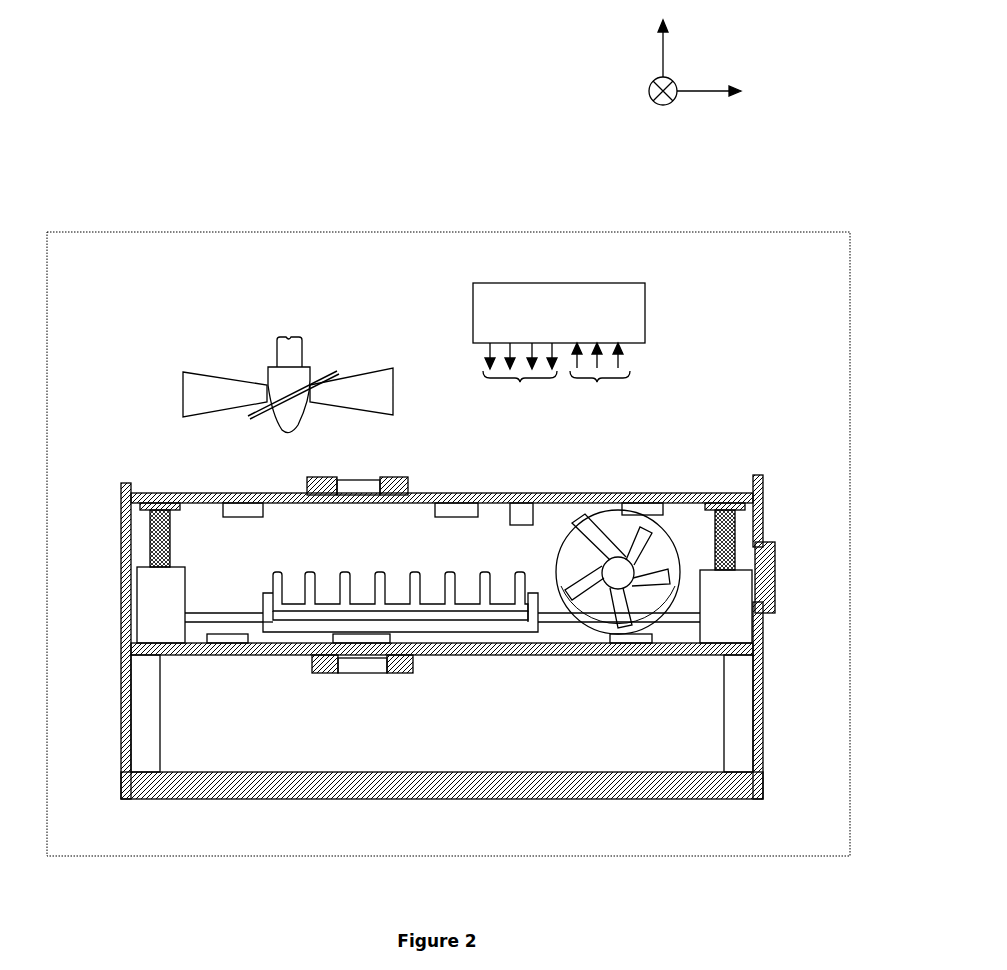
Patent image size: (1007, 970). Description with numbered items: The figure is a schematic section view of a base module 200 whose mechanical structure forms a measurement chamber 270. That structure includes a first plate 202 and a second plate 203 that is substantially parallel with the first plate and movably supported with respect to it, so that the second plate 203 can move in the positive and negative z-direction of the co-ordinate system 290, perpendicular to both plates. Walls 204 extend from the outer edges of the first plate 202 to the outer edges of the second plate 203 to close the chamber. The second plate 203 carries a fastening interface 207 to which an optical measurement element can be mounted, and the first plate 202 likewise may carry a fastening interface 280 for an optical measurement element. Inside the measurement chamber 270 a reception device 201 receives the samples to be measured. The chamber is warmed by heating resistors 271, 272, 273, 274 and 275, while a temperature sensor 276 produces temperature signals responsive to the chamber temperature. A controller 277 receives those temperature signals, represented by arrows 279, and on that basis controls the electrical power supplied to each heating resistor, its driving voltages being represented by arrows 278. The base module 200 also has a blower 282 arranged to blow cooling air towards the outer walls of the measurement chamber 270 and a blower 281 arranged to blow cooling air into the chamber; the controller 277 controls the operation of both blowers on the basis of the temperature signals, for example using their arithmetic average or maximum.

The base module 200 is at (388, 232).
The reception device 201 is at (263, 604).
The first plate 202 is at (682, 656).
The second plate 203 is at (578, 500).
The walls 204 is at (121, 712).
The fastening interface 207 is at (307, 486).
The measurement chamber 270 is at (327, 538).
The heating resistor 271 is at (222, 510).
The heating resistor 272 is at (648, 492).
The heating resistor 273 is at (632, 656).
The heating resistor 274 is at (418, 674).
The heating resistor 275 is at (234, 655).
The temperature sensor 276 is at (522, 506).
The controller 277 is at (559, 313).
The arrows representing driving voltages 278 is at (520, 375).
The arrows representing temperature signals 279 is at (600, 375).
The fastening interface 280 is at (318, 674).
The blower 281 is at (560, 568).
The blower 282 is at (268, 376).
The co-ordinate system 290 is at (690, 44).